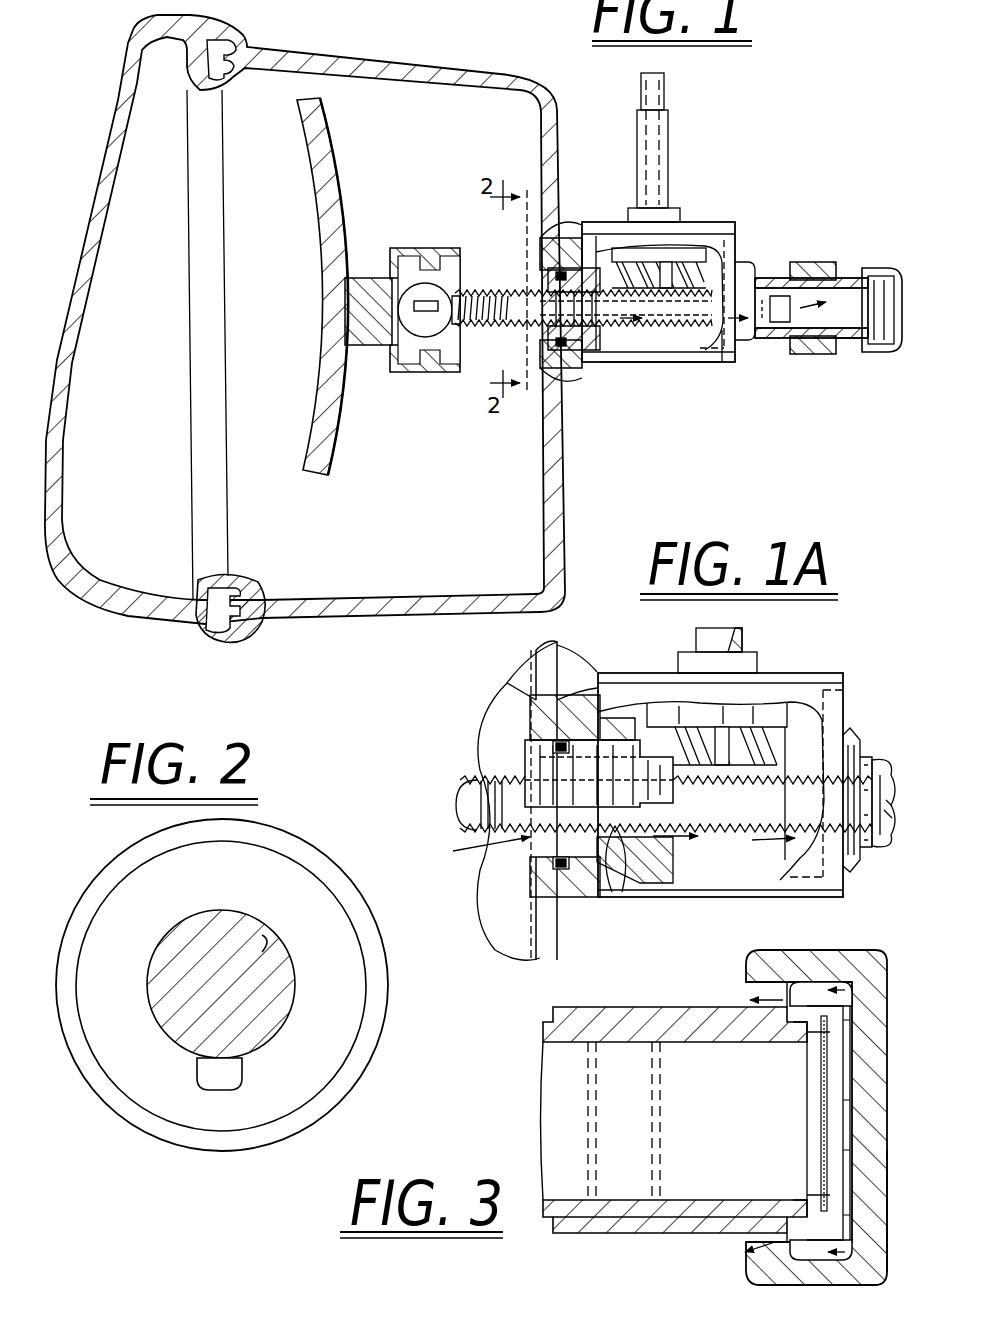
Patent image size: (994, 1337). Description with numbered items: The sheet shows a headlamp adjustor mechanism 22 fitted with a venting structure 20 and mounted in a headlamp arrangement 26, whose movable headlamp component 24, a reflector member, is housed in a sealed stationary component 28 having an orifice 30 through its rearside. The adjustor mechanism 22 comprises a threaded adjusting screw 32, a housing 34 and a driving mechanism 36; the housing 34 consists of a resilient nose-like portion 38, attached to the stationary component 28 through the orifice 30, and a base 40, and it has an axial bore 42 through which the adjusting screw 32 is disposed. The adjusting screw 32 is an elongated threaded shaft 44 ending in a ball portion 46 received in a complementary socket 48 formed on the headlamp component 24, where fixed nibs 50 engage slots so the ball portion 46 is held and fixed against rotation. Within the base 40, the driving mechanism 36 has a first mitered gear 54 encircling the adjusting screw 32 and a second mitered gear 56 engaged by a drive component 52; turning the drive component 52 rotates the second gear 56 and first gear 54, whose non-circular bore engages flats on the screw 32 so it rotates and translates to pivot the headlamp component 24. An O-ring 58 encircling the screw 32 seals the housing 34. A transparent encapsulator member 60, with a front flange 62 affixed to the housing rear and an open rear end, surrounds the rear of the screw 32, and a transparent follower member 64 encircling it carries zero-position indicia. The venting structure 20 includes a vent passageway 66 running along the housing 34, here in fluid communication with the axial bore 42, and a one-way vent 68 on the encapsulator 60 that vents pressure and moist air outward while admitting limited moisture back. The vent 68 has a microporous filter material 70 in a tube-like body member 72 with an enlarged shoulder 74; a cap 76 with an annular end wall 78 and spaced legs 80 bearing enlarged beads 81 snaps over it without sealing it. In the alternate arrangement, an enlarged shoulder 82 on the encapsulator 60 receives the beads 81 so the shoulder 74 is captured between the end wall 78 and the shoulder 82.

In FIG. 1, the venting structure 20 is at (842, 266).
In FIG. 1, the headlamp adjustor mechanism 22 is at (702, 220).
In FIG. 1, the movable headlamp component 24 is at (350, 208).
In FIG. 1, the headlamp arrangement 26 is at (375, 42).
In FIG. 1, the stationary component 28 is at (506, 78).
In FIG. 1, the orifice 30 is at (560, 262).
In FIG. 1, the threaded adjusting screw 32 is at (498, 322).
In FIG. 1A, the threaded adjusting screw 32 is at (470, 826).
In FIG. 2, the threaded adjusting screw 32 is at (262, 1030).
In FIG. 1, the housing 34 is at (706, 358).
In FIG. 1, the driving mechanism 36 is at (696, 266).
In FIG. 1, the nose-like portion 38 is at (600, 340).
In FIG. 1A, the nose-like portion 38 is at (528, 770).
In FIG. 1, the base 40 is at (665, 364).
In FIG. 1A, the base 40 is at (648, 690).
In FIG. 2, the axial bore 42 is at (272, 943).
In FIG. 1, the elongated threaded shaft 44 is at (512, 300).
In FIG. 1, the ball portion 46 is at (442, 348).
In FIG. 1, the socket 48 is at (398, 318).
In FIG. 1, the nibs 50 is at (428, 300).
In FIG. 1, the drive component 52 is at (660, 132).
In FIG. 1A, the first mitered gear 54 is at (660, 870).
In FIG. 1A, the second mitered gear 56 is at (760, 740).
In FIG. 1A, the O-ring 58 is at (562, 870).
In FIG. 1, the encapsulator member 60 is at (775, 340).
In FIG. 3, the encapsulator member 60 is at (648, 1234).
In FIG. 1, the flange 62 is at (748, 280).
In FIG. 1, the follower member 64 is at (800, 266).
In FIG. 1, the vent passageway 66 is at (575, 330).
In FIG. 1A, the vent passageway 66 is at (620, 890).
In FIG. 2, the vent passageway 66 is at (228, 1070).
In FIG. 1, the one-way vent 68 is at (878, 352).
In FIG. 3, the one-way vent 68 is at (826, 1286).
In FIG. 3, the microporous filter material 70 is at (845, 1118).
In FIG. 1, the tube-like body member 72 is at (850, 338).
In FIG. 3, the tube-like body member 72 is at (632, 1208).
In FIG. 3, the enlarged shoulder 74 is at (822, 1090).
In FIG. 1, the cap 76 is at (900, 322).
In FIG. 3, the cap 76 is at (890, 1250).
In FIG. 3, the annular end wall 78 is at (848, 1125).
In FIG. 3, the legs 80 is at (800, 968).
In FIG. 3, the enlarged bead 81 is at (772, 975).
In FIG. 3, the enlarged shoulder 82 is at (800, 1040).